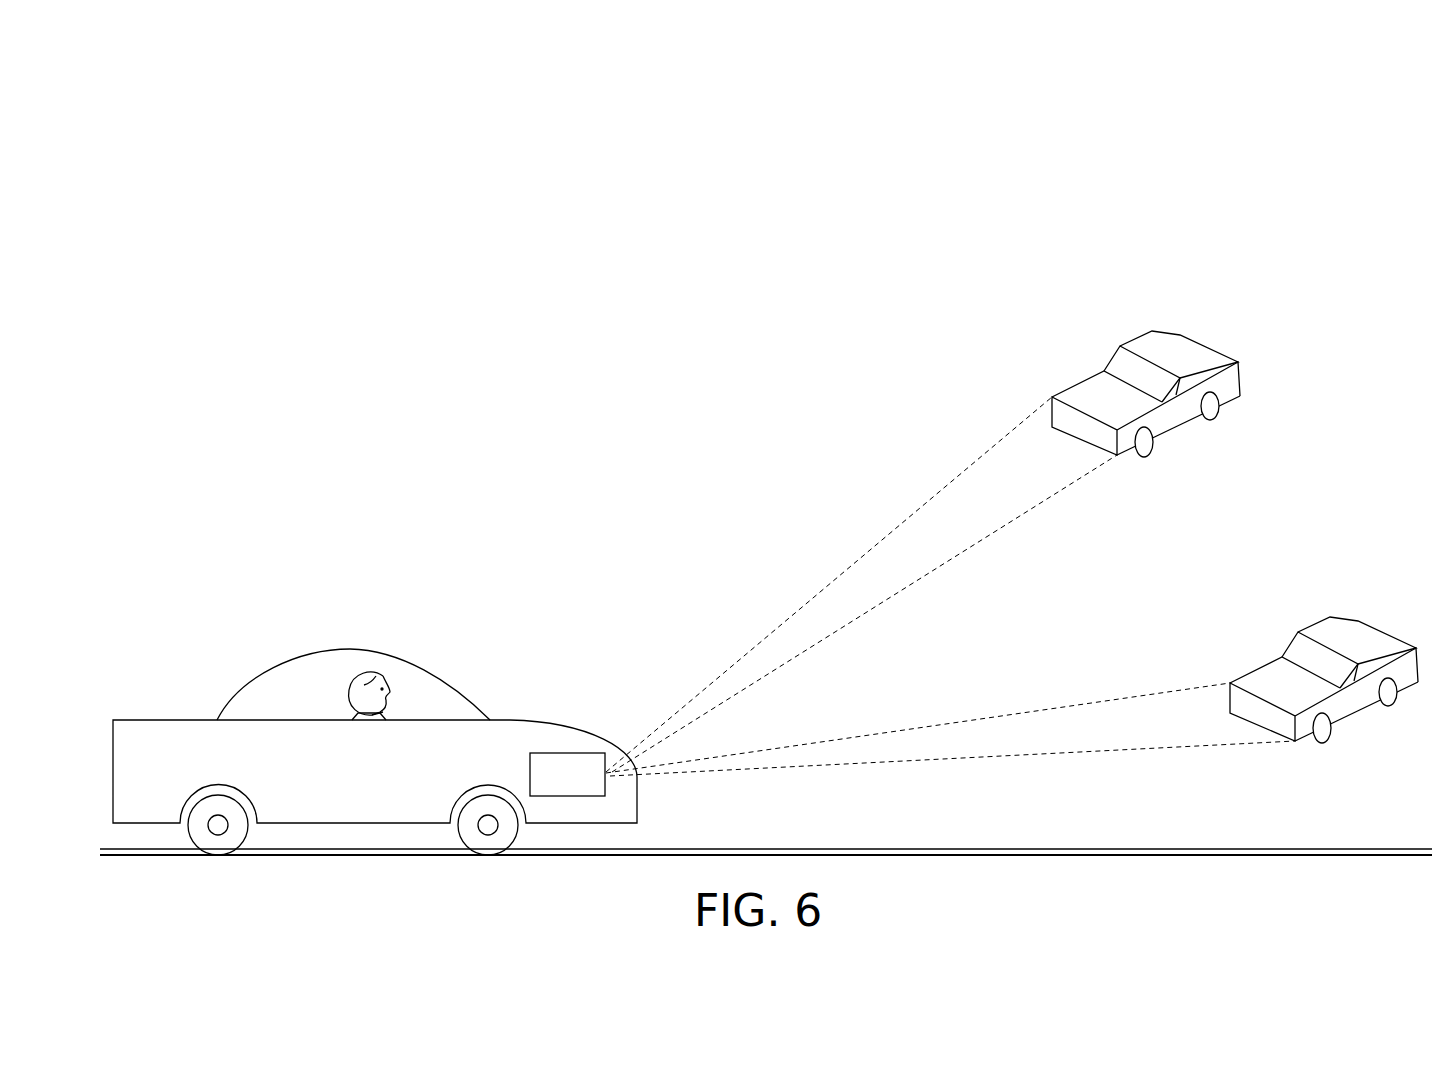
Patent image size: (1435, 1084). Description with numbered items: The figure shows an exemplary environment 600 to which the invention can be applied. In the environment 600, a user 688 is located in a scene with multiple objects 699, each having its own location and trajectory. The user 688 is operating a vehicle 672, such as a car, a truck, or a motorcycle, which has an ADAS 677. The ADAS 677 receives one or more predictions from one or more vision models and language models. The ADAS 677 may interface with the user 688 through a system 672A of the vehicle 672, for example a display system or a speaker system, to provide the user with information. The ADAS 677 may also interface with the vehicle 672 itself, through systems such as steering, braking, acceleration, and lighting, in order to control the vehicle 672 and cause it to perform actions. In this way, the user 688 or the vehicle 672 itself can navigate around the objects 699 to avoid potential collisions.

The environment 600 is at (219, 106).
The vehicle 672 is at (348, 776).
The system 672A is at (471, 705).
The user 688 is at (336, 687).
The ADAS 677 is at (495, 887).
The objects 699 is at (1127, 324).